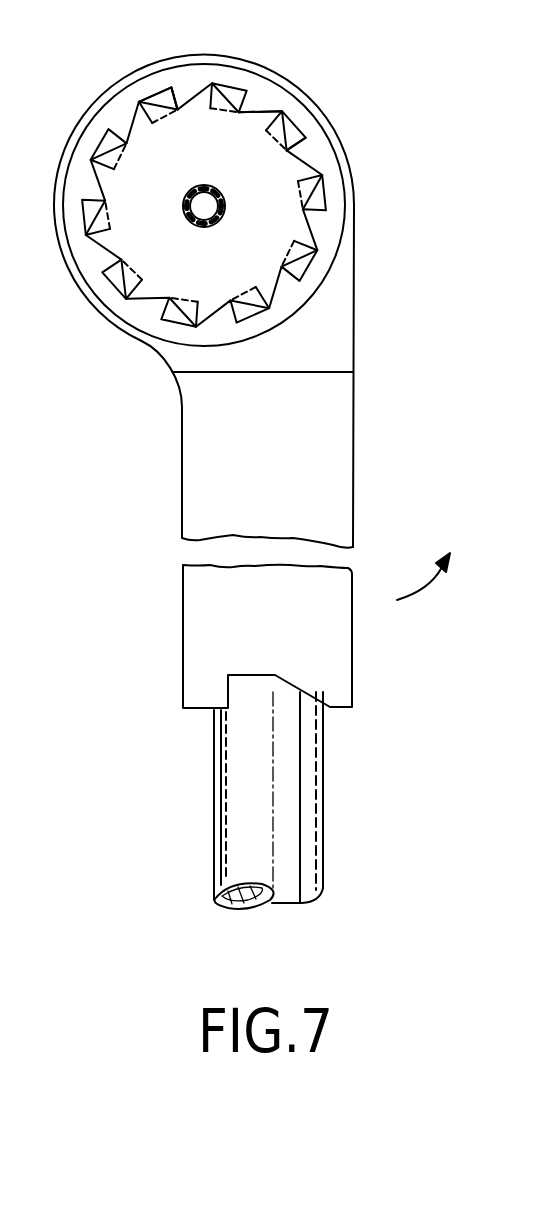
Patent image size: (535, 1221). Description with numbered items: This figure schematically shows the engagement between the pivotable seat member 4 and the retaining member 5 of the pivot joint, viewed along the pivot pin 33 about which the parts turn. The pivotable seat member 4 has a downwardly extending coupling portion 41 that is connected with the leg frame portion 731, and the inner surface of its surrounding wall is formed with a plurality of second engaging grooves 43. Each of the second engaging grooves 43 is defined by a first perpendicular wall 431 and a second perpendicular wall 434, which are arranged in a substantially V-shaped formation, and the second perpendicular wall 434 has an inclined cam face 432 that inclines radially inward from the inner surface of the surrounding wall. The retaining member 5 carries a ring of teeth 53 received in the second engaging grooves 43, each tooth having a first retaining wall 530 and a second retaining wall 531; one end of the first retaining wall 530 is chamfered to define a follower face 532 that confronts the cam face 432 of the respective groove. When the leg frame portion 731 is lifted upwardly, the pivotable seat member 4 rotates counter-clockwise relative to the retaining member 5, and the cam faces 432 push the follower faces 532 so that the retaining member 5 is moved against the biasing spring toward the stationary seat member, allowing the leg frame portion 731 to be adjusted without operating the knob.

The pivotable seat member 4 is at (353, 324).
The coupling portion 41 is at (295, 438).
The second engaging grooves 43 is at (280, 112).
The first perpendicular wall 431 is at (257, 110).
The cam face 432 is at (288, 133).
The second perpendicular wall 434 is at (288, 150).
The pivot pin 33 is at (226, 199).
The retaining member 5 is at (260, 217).
The teeth 53 is at (137, 112).
The first retaining wall 530 is at (157, 108).
The second retaining wall 531 is at (139, 116).
The follower face 532 is at (193, 77).
The leg frame portion 731 is at (275, 800).